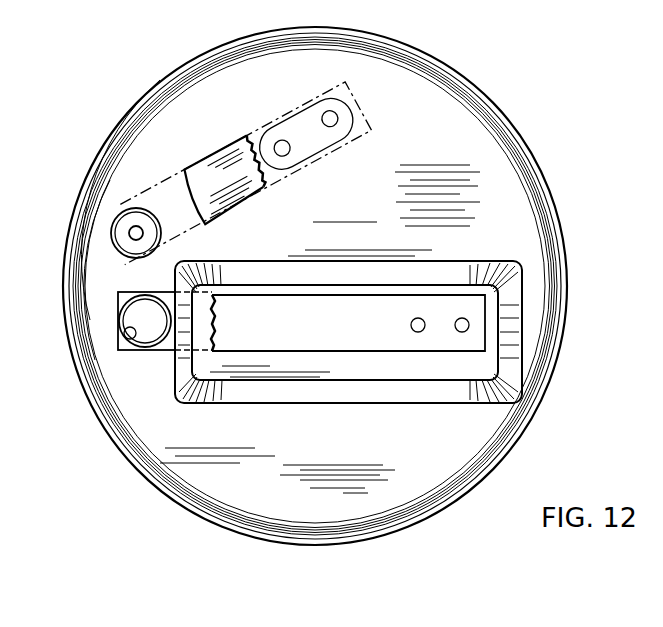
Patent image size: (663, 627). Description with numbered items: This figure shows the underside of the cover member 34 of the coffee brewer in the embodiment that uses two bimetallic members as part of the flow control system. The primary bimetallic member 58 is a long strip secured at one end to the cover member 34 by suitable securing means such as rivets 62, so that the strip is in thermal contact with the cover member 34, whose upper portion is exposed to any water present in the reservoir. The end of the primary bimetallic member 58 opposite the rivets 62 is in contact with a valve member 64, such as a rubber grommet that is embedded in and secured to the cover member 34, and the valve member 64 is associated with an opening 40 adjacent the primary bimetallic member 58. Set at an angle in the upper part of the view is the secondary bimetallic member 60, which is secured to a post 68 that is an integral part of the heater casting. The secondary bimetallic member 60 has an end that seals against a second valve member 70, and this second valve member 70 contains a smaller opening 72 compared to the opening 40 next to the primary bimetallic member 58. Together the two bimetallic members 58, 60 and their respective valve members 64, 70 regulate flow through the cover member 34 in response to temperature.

The cover member 34 is at (558, 232).
The opening 40 is at (122, 337).
The primary bimetallic member 58 is at (295, 335).
The secondary bimetallic member 60 is at (263, 187).
The rivets 62 is at (420, 332).
The valve member 64 is at (122, 323).
The post 68 is at (330, 152).
The second valve member 70 is at (135, 232).
The smaller opening 72 is at (130, 212).